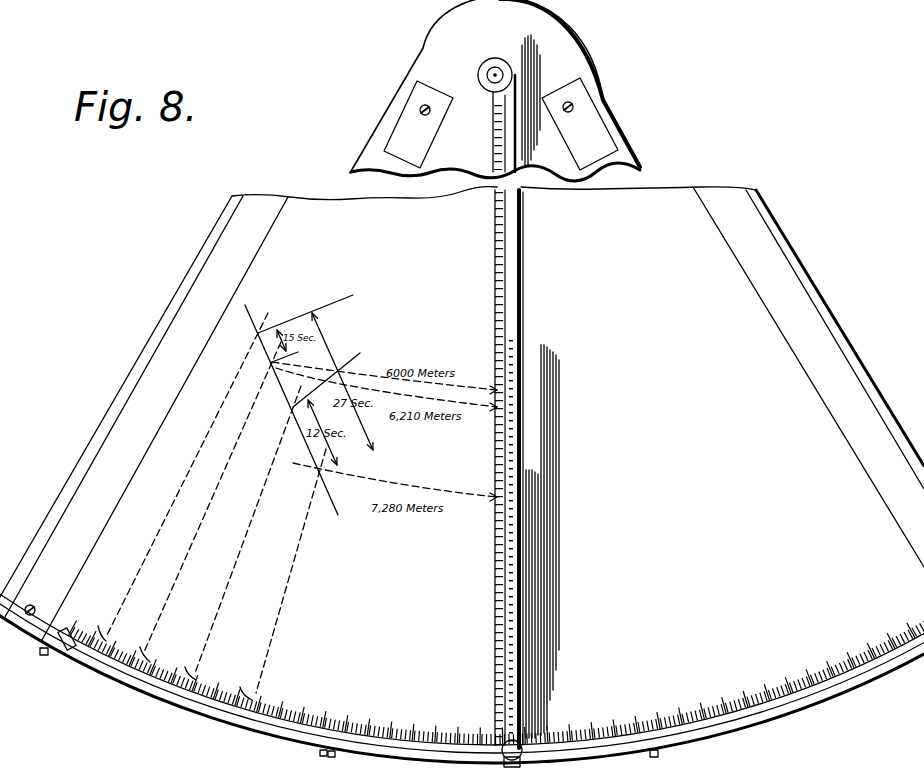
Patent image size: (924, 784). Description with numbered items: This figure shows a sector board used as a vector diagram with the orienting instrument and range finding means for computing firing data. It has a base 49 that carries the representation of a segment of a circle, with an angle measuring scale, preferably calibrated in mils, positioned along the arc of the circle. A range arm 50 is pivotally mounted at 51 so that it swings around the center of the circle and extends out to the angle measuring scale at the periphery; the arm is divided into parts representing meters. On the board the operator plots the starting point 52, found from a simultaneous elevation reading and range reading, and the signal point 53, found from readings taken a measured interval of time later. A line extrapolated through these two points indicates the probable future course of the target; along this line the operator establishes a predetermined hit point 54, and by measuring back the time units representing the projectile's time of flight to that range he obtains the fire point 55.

The base 49 is at (462, 475).
The range arm 50 is at (522, 235).
The pivot 51 is at (493, 74).
The starting point 52 is at (258, 333).
The signal point 53 is at (271, 362).
The hit point 54 is at (321, 470).
The fire point 55 is at (360, 353).